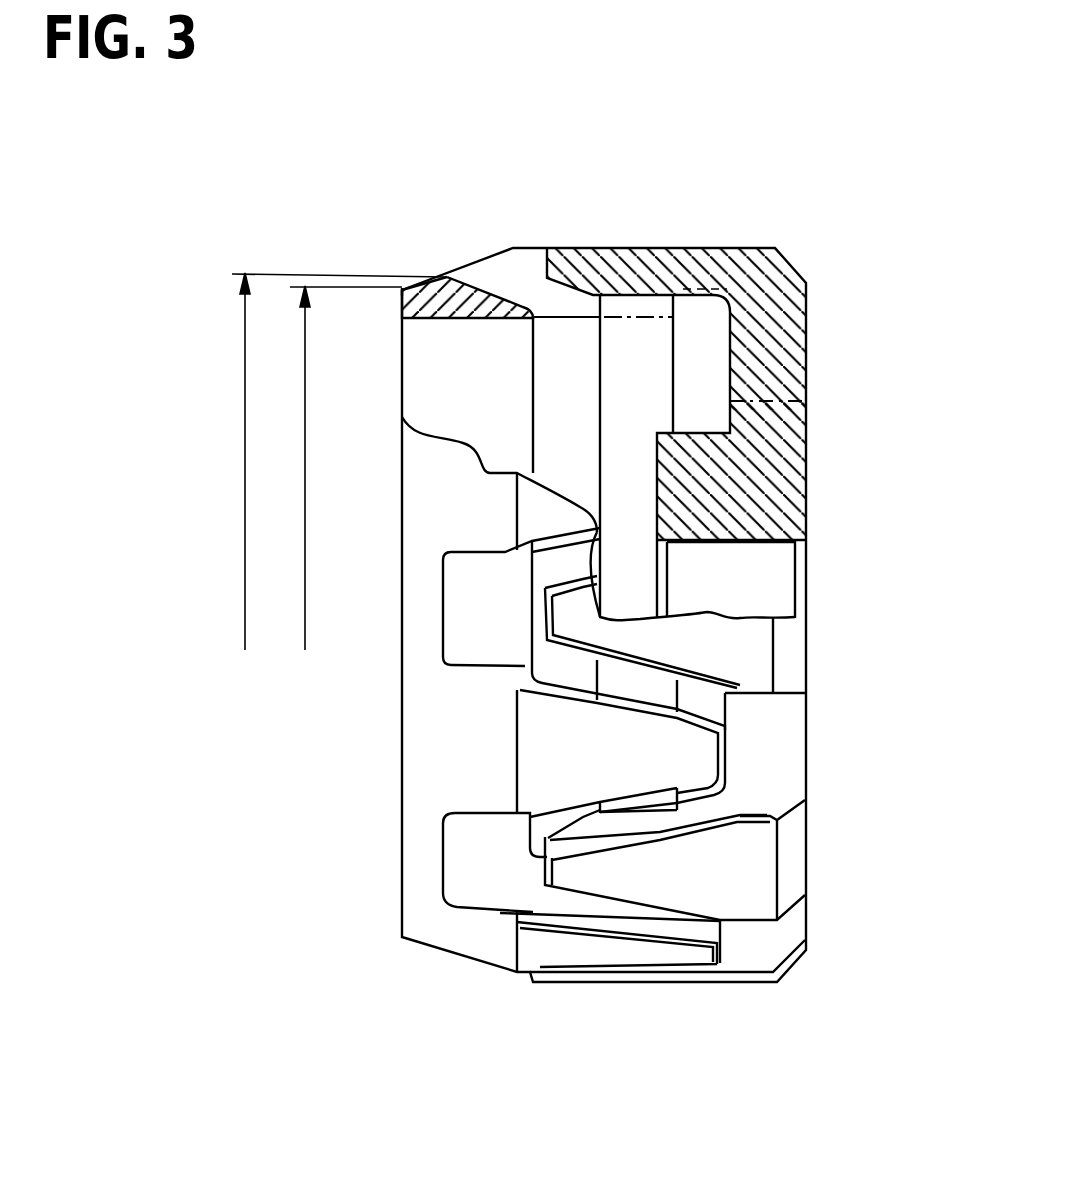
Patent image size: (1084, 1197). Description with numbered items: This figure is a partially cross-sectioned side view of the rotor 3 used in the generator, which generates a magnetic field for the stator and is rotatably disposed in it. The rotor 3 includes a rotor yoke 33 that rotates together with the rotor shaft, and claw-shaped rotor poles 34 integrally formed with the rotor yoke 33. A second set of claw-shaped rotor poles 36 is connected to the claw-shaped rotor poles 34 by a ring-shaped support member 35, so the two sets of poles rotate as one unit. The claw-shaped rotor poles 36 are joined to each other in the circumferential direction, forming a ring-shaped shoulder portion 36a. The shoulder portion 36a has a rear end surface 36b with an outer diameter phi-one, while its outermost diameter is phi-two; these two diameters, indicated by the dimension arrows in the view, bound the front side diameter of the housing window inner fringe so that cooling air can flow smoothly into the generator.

The rotor 3 is at (832, 244).
The rotor yoke 33 is at (772, 482).
The claw-shaped rotor poles 34 is at (700, 268).
The ring-shaped support member 35 is at (636, 335).
The claw-shaped rotor poles 36 is at (465, 937).
The shoulder portion 36a is at (485, 308).
The rear end surface 36b is at (402, 290).